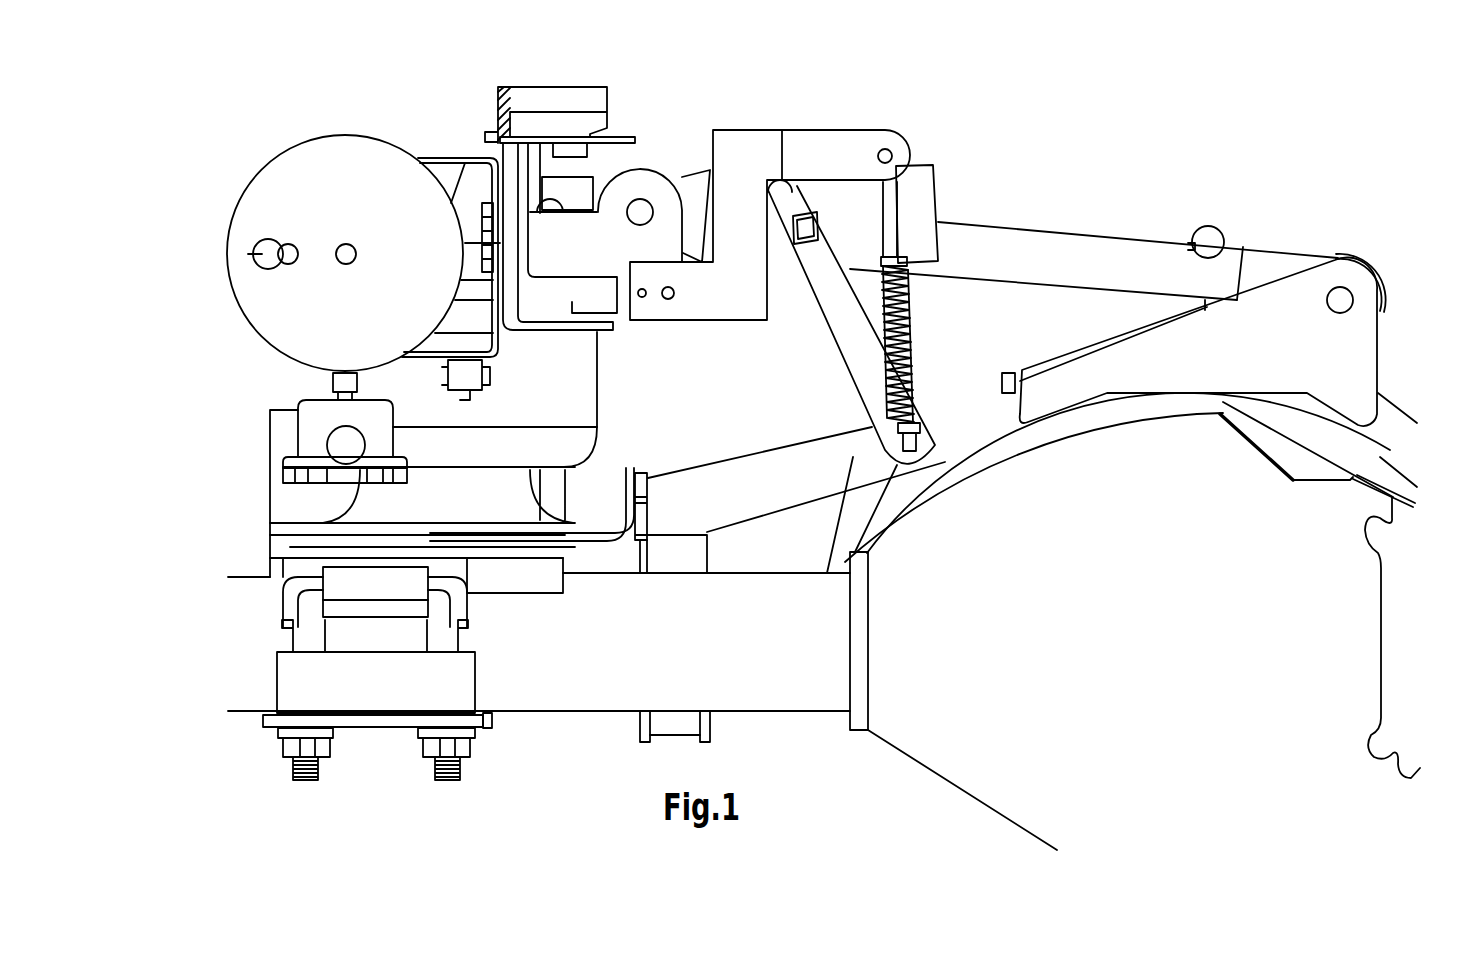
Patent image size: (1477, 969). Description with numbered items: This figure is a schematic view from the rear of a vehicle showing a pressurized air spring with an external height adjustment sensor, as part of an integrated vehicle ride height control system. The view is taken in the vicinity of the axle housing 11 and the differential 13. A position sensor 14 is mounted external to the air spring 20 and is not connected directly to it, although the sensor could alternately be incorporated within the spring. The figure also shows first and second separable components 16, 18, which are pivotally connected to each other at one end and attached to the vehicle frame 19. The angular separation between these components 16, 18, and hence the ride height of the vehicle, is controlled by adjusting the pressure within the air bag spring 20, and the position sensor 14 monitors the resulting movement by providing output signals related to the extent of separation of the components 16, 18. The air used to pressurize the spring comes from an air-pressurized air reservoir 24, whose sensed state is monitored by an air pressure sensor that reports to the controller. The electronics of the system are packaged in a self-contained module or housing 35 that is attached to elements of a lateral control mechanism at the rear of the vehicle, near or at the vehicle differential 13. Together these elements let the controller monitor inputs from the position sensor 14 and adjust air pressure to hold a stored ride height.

The axle housing 11 is at (586, 682).
The differential 13 is at (983, 723).
The position sensor 14 is at (938, 310).
The first separable component 16 is at (1113, 262).
The second separable component 18 is at (973, 425).
The vehicle frame 19 is at (1340, 357).
The air spring 20 is at (580, 398).
The air reservoir 24 is at (318, 166).
The housing 35 is at (925, 187).